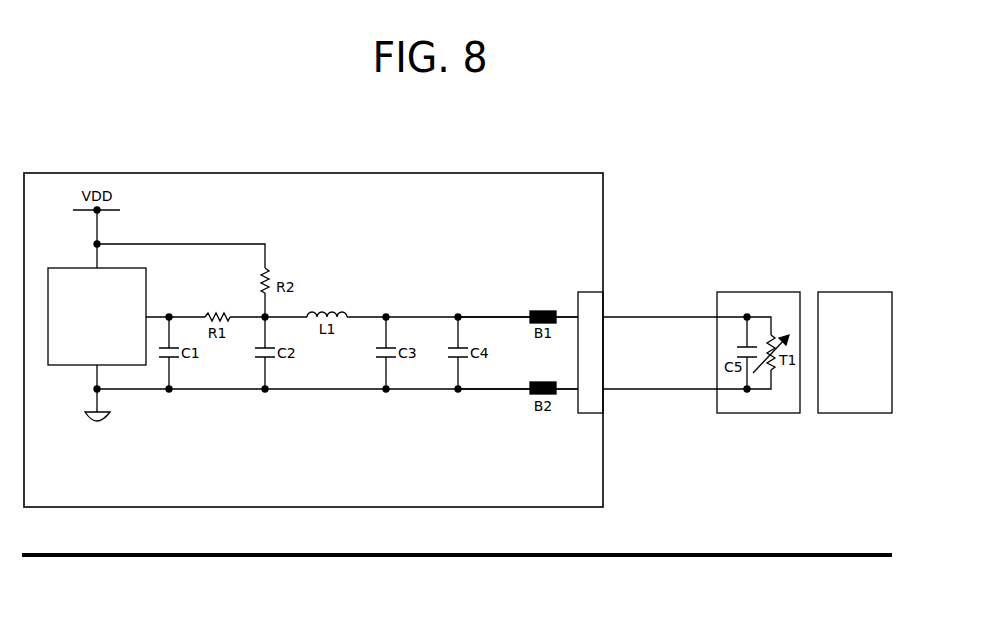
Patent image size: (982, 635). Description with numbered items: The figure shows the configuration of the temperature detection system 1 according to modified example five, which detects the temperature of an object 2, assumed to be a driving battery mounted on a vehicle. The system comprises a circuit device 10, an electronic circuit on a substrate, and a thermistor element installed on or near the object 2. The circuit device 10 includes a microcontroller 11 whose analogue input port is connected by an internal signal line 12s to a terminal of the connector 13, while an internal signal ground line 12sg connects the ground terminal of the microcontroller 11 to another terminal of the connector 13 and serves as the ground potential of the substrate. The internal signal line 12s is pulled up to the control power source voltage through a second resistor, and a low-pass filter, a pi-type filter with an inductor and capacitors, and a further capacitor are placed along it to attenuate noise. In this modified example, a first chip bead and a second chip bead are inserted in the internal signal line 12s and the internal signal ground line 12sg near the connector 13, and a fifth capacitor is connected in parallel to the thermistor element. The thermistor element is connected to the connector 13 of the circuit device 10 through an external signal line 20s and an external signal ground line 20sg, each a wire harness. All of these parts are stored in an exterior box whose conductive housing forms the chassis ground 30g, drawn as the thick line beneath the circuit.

The circuit device 10 is at (570, 172).
The microcontroller 11 is at (147, 287).
The connector 13 is at (589, 291).
The internal signal line 12s is at (482, 316).
The internal signal ground line 12sg is at (482, 390).
The external signal line 20s is at (650, 316).
The external signal ground line 20sg is at (650, 390).
The object 2 is at (863, 290).
The chassis ground 30g is at (862, 553).
The temperature detection system 1 is at (393, 601).